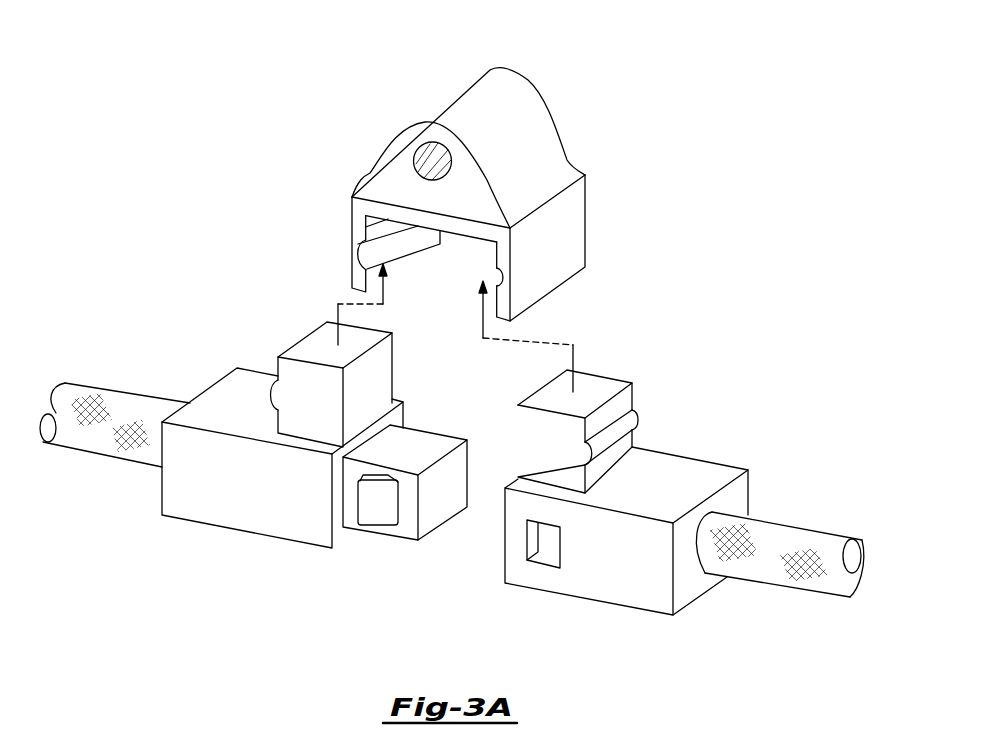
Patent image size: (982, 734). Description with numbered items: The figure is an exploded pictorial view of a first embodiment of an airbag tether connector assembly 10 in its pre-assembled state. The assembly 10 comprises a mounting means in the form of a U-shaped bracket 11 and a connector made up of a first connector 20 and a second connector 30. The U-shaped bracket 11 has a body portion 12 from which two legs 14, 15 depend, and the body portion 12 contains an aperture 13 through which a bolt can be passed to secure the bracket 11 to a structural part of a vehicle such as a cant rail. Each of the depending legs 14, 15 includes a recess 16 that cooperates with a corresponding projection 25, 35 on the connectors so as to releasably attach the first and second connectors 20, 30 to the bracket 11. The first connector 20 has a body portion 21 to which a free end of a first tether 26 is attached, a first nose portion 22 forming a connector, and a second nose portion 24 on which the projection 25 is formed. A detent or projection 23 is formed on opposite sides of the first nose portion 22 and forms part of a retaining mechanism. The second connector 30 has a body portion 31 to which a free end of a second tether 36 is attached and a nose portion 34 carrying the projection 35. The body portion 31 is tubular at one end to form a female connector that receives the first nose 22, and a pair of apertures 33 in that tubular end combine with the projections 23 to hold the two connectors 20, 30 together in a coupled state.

The airbag tether connector assembly 10 is at (219, 200).
The U-shaped bracket 11 is at (552, 158).
The body portion 12 is at (377, 165).
The aperture 13 is at (433, 152).
The leg 14 is at (352, 262).
The leg 15 is at (575, 244).
The recess 16 is at (378, 242).
The first connector 20 is at (176, 526).
The body portion 21 is at (263, 515).
The first nose portion 22 is at (410, 540).
The projection 23 is at (383, 510).
The second nose portion 24 is at (303, 333).
The projection 25 is at (278, 383).
The first tether 26 is at (103, 453).
The second connector 30 is at (652, 623).
The body portion 31 is at (607, 582).
The aperture 33 is at (550, 560).
The nose portion 34 is at (620, 400).
The projection 35 is at (633, 420).
The second tether 36 is at (787, 590).